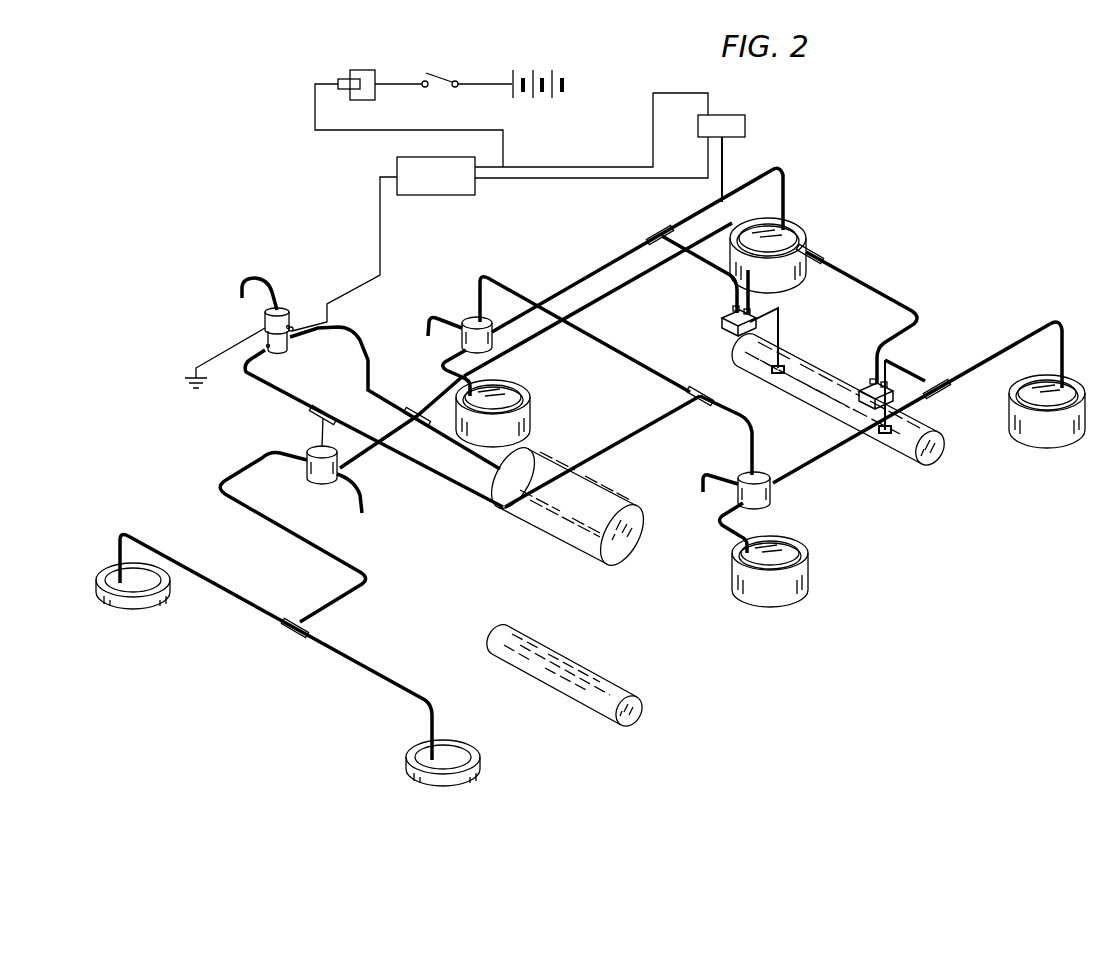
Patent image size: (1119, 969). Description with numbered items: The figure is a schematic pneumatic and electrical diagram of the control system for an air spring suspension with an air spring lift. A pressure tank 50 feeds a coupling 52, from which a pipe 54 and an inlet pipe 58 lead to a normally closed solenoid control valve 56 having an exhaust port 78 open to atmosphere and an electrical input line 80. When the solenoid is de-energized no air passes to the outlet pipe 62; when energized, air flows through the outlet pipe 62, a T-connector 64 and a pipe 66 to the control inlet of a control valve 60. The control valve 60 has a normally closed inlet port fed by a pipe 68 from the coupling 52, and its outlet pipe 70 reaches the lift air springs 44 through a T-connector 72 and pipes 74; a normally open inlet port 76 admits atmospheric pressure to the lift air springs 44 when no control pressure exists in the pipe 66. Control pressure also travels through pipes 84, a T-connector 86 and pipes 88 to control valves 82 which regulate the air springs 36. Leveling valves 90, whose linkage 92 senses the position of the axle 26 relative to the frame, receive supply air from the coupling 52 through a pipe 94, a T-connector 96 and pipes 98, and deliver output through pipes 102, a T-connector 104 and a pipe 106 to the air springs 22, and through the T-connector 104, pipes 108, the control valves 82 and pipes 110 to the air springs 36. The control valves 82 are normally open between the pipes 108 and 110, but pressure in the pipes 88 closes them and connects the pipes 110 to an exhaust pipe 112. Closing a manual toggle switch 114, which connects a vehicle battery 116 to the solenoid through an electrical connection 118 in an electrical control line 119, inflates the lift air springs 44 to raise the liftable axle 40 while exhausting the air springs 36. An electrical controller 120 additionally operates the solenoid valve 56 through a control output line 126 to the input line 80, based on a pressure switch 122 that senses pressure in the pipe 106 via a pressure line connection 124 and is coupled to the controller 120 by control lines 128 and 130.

The air spring 22 is at (795, 229).
The axle 26 is at (928, 458).
The air spring 36 is at (515, 389).
The liftable axle 40 is at (625, 691).
The lift air spring 44 is at (97, 603).
The pressure tank 50 is at (635, 546).
The coupling 52 is at (417, 412).
The pipe 54 is at (441, 432).
The solenoid control valve 56 is at (232, 270).
The inlet pipe 58 is at (334, 325).
The control valve 60 is at (316, 483).
The outlet pipe 62 is at (251, 372).
The T-connector 64 is at (323, 410).
The pipe 66 is at (322, 433).
The pipe 68 is at (399, 461).
The outlet pipe 70 is at (232, 466).
The T-connector 72 is at (288, 638).
The pipe 74 is at (200, 566).
The normally open inlet port 76 is at (343, 477).
The exhaust port 78 is at (281, 306).
The electrical input line 80 is at (292, 322).
The control valve 82 is at (483, 320).
The pipe 84 is at (645, 426).
The T-connector 86 is at (700, 390).
The pipe 88 is at (605, 343).
The leveling valve 90 is at (726, 310).
The linkage 92 is at (782, 322).
The pipe 94 is at (636, 279).
The T-connector 96 is at (818, 254).
The pipe 98 is at (880, 293).
The pipe 102 is at (703, 258).
The T-connector 104 is at (660, 230).
The pipe 106 is at (783, 191).
The pipe 108 is at (610, 253).
The pipe 110 is at (444, 361).
The exhaust pipe 112 is at (436, 318).
The toggle switch 114 is at (444, 78).
The vehicle battery 116 is at (545, 72).
The electrical connection 118 is at (350, 78).
The electrical control line 119 is at (315, 108).
The electrical controller 120 is at (432, 157).
The pressure switch 122 is at (736, 115).
The pressure line connection 124 is at (723, 150).
The control output line 126 is at (380, 181).
The control line 128 is at (571, 167).
The control line 130 is at (585, 180).